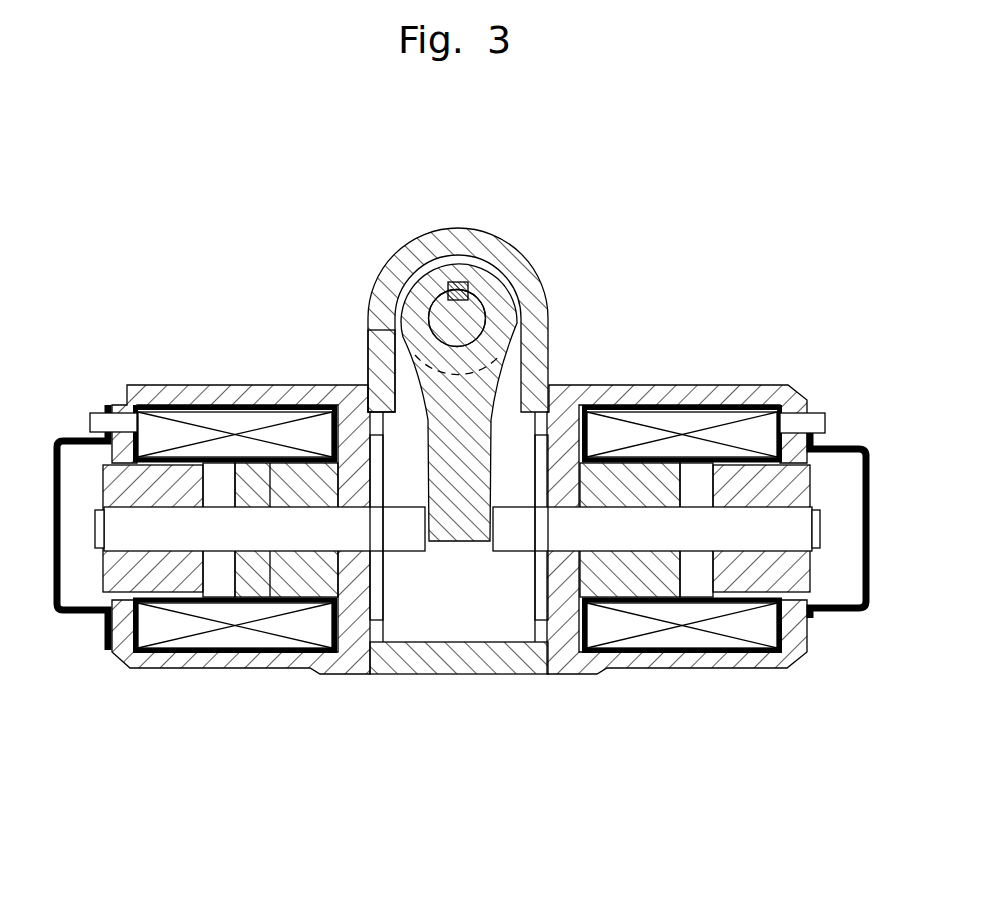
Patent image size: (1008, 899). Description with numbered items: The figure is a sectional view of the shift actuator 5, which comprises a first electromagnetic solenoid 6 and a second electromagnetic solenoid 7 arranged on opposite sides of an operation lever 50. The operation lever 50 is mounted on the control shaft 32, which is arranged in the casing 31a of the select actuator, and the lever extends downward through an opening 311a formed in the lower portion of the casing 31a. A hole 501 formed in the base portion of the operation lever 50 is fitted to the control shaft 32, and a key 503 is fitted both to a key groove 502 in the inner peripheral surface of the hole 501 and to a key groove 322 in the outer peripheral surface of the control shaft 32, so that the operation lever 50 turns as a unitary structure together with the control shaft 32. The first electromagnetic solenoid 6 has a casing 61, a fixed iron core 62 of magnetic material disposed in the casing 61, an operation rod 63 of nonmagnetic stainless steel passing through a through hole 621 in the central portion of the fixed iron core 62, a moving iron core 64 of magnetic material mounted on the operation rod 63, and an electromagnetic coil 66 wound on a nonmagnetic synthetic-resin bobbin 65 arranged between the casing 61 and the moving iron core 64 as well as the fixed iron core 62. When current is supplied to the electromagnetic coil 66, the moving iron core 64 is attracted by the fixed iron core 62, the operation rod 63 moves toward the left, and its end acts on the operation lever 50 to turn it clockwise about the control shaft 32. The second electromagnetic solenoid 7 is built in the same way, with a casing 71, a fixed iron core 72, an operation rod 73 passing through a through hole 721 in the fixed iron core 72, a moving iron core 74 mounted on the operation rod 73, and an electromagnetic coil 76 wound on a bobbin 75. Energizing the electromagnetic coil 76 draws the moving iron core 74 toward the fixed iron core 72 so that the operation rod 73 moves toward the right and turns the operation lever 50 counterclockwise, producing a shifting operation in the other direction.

The shift actuator 5 is at (553, 406).
The casing 31a is at (482, 230).
The opening 311a is at (400, 377).
The key groove 322 is at (402, 265).
The control shaft 32 is at (488, 318).
The operation lever 50 is at (458, 532).
The hole 501 is at (487, 303).
The key groove 502 is at (486, 260).
The key 503 is at (449, 283).
The first electromagnetic solenoid 6 is at (679, 551).
The casing 61 is at (635, 662).
The fixed iron core 62 is at (622, 470).
The through hole 621 is at (657, 510).
The operation rod 63 is at (692, 510).
The moving iron core 64 is at (772, 573).
The bobbin 65 is at (728, 602).
The electromagnetic coil 66 is at (697, 637).
The second electromagnetic solenoid 7 is at (241, 562).
The casing 71 is at (288, 670).
The fixed iron core 72 is at (305, 470).
The through hole 721 is at (263, 517).
The operation rod 73 is at (220, 517).
The moving iron core 74 is at (120, 587).
The bobbin 75 is at (168, 600).
The electromagnetic coil 76 is at (217, 637).